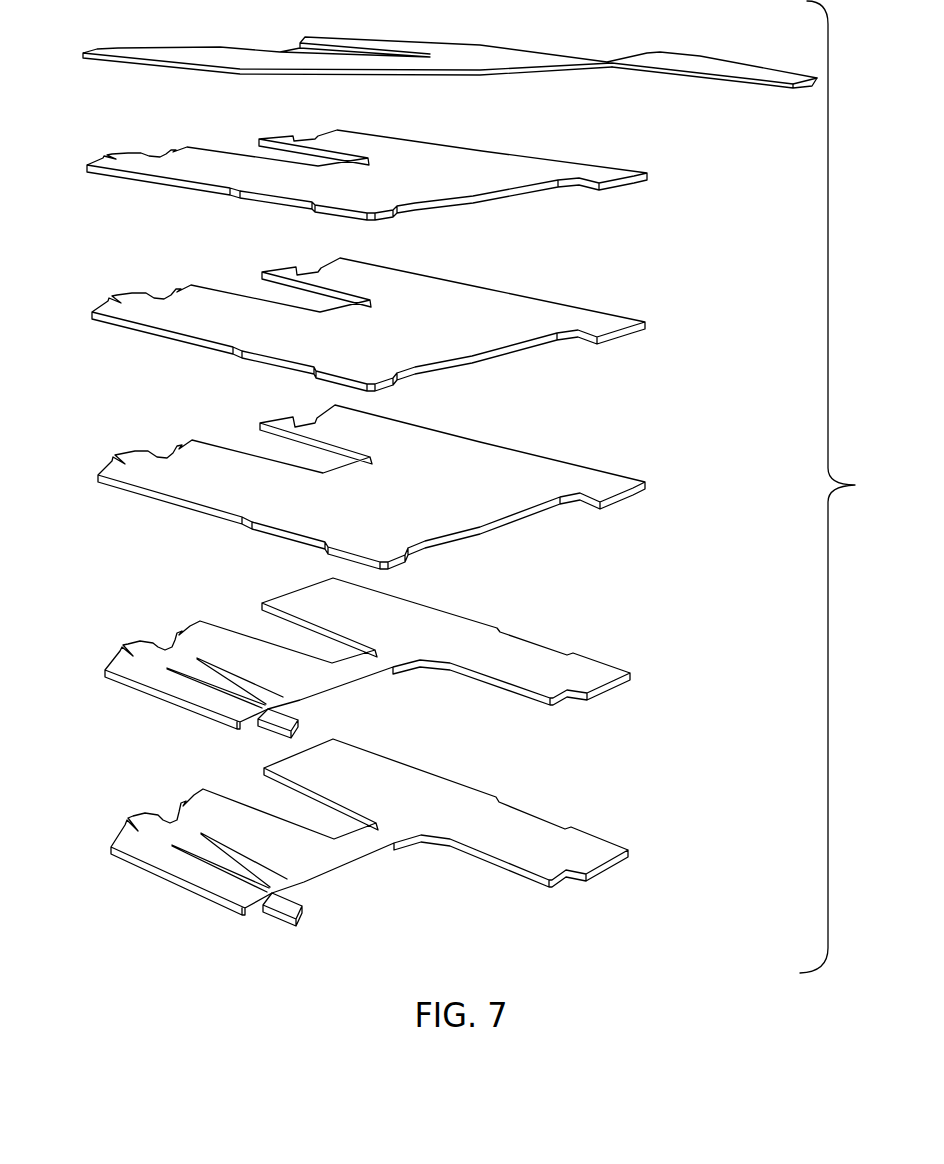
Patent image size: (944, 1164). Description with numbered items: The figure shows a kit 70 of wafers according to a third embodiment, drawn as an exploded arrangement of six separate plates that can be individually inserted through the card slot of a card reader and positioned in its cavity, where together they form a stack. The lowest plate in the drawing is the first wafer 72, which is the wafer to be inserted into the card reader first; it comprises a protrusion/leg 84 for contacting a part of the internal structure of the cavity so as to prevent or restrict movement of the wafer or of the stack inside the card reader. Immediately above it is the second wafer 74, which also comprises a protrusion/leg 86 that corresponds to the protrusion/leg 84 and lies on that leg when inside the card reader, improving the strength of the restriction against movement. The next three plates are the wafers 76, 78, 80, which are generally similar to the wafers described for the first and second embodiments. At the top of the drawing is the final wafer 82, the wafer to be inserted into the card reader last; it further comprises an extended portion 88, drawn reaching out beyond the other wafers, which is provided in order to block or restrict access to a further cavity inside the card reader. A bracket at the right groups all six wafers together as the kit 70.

The kit of wafers 70 is at (847, 487).
The first wafer 72 is at (112, 846).
The second wafer 74 is at (105, 671).
The wafer 76 is at (99, 475).
The wafer 78 is at (93, 312).
The wafer 80 is at (87, 166).
The final wafer 82 is at (84, 54).
The protrusion/leg 84 is at (296, 919).
The protrusion/leg 86 is at (300, 730).
The extended portion 88 is at (743, 63).